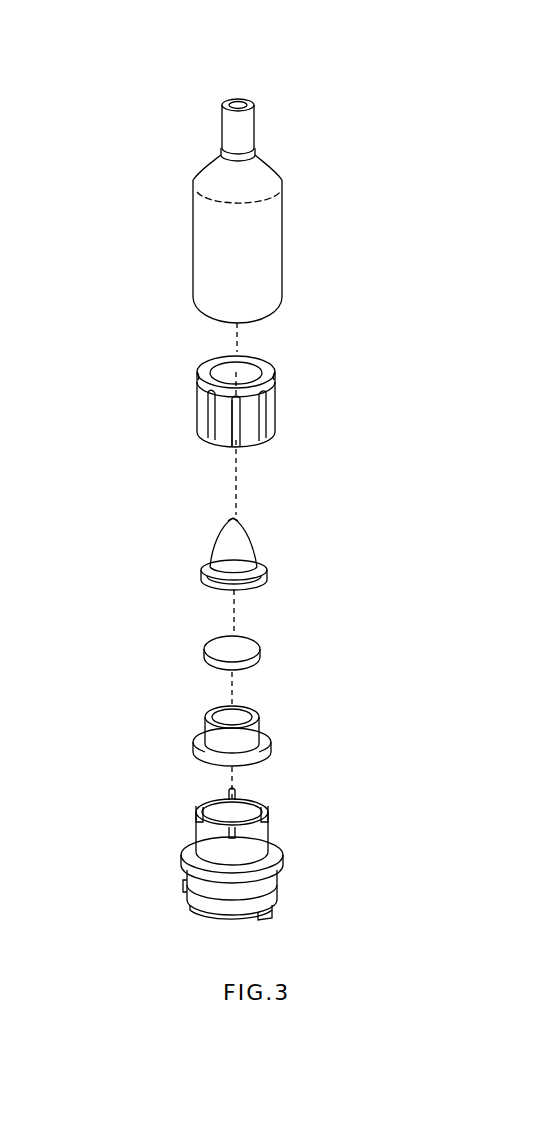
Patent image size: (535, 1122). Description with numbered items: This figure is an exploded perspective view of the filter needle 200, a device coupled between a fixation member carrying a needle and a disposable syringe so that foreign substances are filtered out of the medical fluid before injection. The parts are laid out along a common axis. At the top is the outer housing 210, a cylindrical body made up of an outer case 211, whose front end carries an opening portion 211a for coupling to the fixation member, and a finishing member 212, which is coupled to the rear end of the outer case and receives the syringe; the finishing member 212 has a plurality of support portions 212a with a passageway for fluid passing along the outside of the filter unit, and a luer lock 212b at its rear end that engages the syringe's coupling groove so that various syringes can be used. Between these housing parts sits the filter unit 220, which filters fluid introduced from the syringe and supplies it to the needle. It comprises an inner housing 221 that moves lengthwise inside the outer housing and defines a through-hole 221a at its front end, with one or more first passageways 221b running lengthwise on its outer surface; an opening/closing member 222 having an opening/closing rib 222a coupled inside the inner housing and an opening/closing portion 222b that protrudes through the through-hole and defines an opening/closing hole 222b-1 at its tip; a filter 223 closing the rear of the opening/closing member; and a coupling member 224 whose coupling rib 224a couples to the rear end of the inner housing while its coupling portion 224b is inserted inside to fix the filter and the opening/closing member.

The filter needle 200 is at (404, 180).
The outer housing 210 is at (107, 266).
The outer case 211 is at (202, 272).
The opening portion 211a is at (238, 108).
The finishing member 212 is at (183, 850).
The support portions 212a is at (272, 814).
The luer lock 212b is at (272, 900).
The filter unit 220 is at (386, 406).
The inner housing 221 is at (270, 419).
The through-hole 221a is at (250, 373).
The first passageways 221b is at (228, 425).
The opening/closing member 222 is at (343, 553).
The opening/closing rib 222a is at (267, 578).
The opening/closing portion 222b is at (253, 545).
The opening/closing hole 222b-1 is at (238, 521).
The filter 223 is at (252, 654).
The coupling member 224 is at (343, 708).
The coupling rib 224a is at (268, 752).
The coupling portion 224b is at (258, 718).